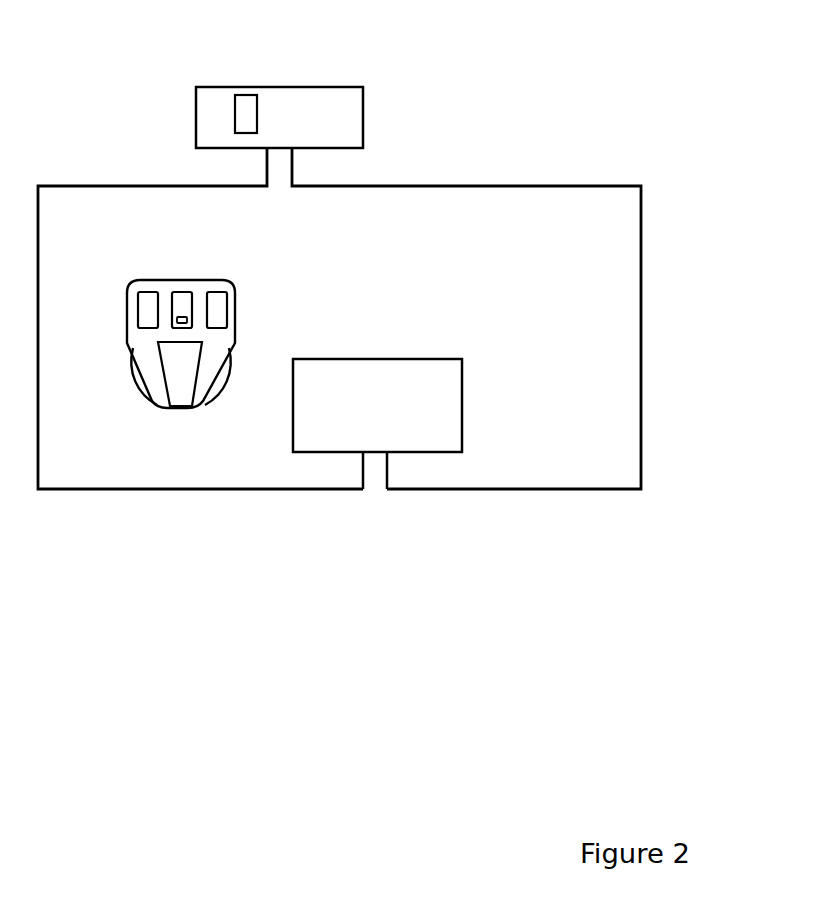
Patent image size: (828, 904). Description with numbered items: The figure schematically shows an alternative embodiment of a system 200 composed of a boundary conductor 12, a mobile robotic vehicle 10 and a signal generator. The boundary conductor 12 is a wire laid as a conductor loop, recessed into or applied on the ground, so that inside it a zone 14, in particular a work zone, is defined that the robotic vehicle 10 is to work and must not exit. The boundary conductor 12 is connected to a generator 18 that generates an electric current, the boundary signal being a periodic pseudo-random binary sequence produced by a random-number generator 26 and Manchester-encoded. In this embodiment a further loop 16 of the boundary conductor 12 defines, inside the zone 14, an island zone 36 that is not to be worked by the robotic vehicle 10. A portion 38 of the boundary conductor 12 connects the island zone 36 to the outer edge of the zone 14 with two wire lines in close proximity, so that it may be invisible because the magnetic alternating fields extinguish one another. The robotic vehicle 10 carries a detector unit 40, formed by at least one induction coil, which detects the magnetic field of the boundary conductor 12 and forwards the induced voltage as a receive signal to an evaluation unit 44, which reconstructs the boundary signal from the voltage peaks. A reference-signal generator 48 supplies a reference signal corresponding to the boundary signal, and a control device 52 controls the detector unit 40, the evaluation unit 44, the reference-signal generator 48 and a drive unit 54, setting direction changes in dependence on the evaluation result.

The system 200 is at (622, 113).
The boundary conductor 12 is at (641, 210).
The zone 14 is at (553, 290).
The generator 18 is at (355, 104).
The random-number generator 26 is at (243, 96).
The further loop 16 is at (462, 386).
The island zone 36 is at (396, 417).
The portion of the boundary conductor 38 is at (372, 478).
The mobile robotic vehicle 10 is at (130, 406).
The detector unit 40 is at (183, 390).
The evaluation unit 44 is at (173, 323).
The reference-signal generator 48 is at (215, 300).
The control device 52 is at (182, 300).
The drive unit 54 is at (152, 300).